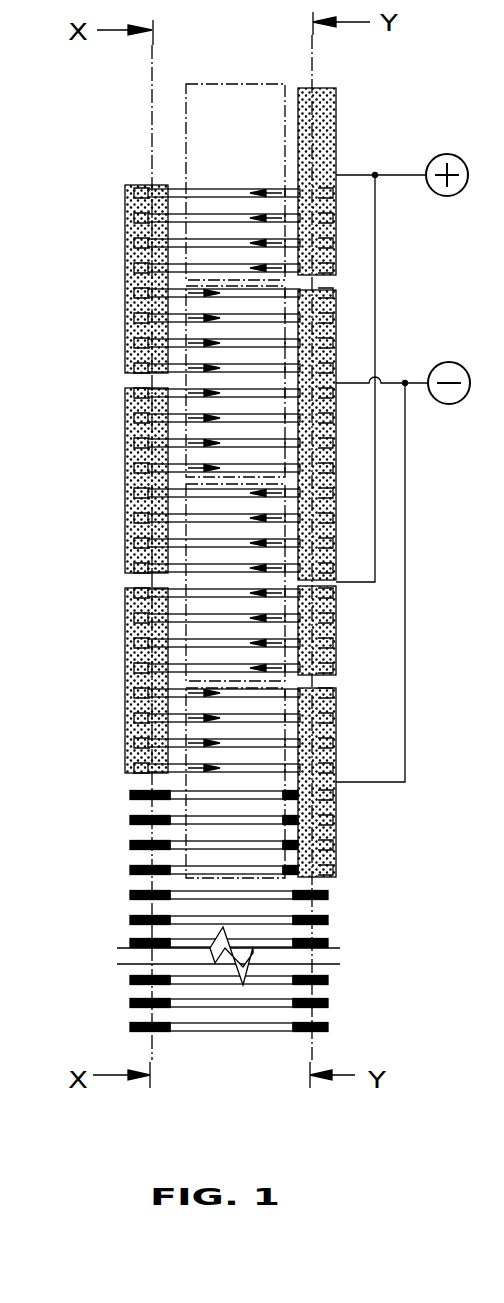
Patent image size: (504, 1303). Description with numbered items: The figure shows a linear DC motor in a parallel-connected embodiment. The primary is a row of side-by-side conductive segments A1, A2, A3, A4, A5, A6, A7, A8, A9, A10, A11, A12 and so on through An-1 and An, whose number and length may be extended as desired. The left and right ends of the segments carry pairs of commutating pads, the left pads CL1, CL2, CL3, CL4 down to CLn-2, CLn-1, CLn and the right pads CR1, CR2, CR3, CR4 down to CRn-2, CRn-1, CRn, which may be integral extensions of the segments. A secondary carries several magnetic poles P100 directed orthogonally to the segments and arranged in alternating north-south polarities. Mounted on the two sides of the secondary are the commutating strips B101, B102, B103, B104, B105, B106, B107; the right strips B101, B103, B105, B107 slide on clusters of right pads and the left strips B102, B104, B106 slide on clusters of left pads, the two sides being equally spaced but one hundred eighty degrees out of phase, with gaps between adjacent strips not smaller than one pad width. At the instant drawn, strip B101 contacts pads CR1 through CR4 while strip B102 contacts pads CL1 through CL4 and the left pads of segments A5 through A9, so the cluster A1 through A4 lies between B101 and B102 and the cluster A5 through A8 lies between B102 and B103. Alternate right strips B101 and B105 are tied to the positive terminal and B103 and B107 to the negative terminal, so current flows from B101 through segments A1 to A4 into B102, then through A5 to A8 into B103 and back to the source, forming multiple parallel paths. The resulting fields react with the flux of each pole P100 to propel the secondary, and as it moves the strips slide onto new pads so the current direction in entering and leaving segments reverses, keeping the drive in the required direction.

The magnetic pole P100 is at (186, 158).
The commutating strip B101 is at (330, 118).
The commutating strip B102 is at (125, 308).
The commutating strip B103 is at (336, 358).
The commutating strip B104 is at (125, 462).
The commutating strip B105 is at (336, 608).
The commutating strip B106 is at (125, 668).
The commutating strip B107 is at (336, 833).
The commutating pad CL1 is at (125, 207).
The commutating pad CL2 is at (125, 232).
The commutating pad CL3 is at (125, 258).
The commutating pad CL4 is at (125, 283).
The commutating pad CR1 is at (322, 184).
The commutating pad CR2 is at (330, 207).
The commutating pad CR3 is at (330, 235).
The commutating pad CR4 is at (330, 258).
The conductive segment A1 is at (224, 197).
The conductive segment A2 is at (224, 222).
The conductive segment A3 is at (224, 247).
The conductive segment A4 is at (224, 272).
The conductive segment A5 is at (233, 298).
The conductive segment A6 is at (233, 323).
The conductive segment A7 is at (233, 348).
The conductive segment A8 is at (233, 373).
The conductive segment A9 is at (233, 398).
The conductive segment A10 is at (233, 423).
The conductive segment A11 is at (233, 448).
The conductive segment A12 is at (233, 473).
The commutating pad CLn-2 is at (130, 979).
The commutating pad CLn-1 is at (130, 1001).
The commutating pad CLn is at (130, 1026).
The commutating pad CRn-2 is at (328, 980).
The commutating pad CRn-1 is at (328, 1003).
The commutating pad CRn is at (328, 1027).
The conductive segment An-1 is at (231, 1005).
The conductive segment An is at (231, 1029).